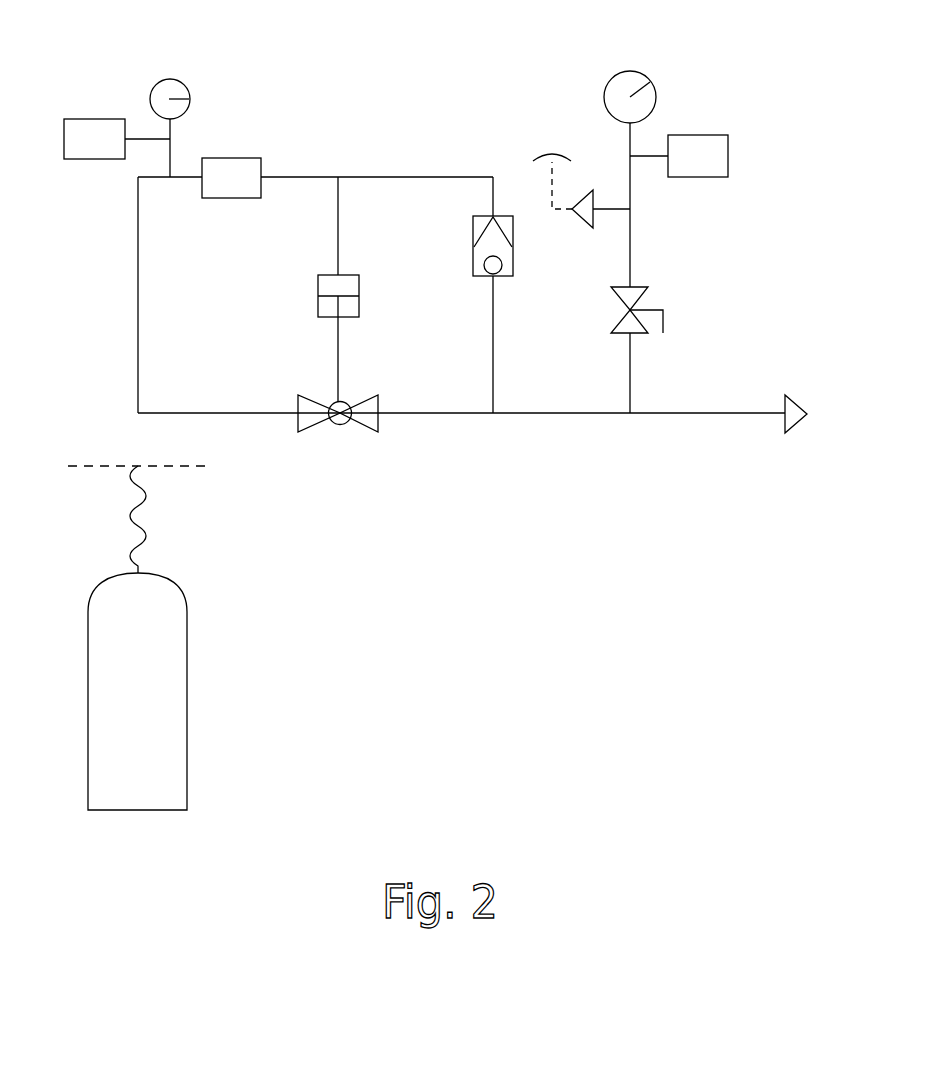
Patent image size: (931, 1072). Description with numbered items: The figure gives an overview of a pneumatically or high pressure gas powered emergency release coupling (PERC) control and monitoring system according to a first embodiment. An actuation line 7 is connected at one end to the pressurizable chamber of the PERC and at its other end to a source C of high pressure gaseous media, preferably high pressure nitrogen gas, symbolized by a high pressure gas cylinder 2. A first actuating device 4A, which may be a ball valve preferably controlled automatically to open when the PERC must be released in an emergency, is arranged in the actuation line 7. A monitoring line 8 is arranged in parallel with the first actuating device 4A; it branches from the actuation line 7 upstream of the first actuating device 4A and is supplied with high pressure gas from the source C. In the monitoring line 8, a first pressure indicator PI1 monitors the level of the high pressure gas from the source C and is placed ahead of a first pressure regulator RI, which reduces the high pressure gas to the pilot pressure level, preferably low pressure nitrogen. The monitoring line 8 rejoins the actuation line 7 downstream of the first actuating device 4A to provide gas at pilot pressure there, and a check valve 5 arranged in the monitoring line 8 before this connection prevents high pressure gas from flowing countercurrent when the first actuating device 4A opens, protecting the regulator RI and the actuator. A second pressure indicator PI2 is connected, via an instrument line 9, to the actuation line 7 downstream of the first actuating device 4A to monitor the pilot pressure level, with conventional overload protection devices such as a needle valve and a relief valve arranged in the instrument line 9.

The high pressure gas cylinder 2 is at (187, 710).
The first actuating device 4A is at (310, 417).
The check valve 5 is at (481, 226).
The actuation line 7 is at (727, 413).
The monitoring line 8 is at (355, 177).
The instrument line 9 is at (630, 247).
The first pressure indicator PI1 is at (170, 79).
The second pressure indicator PI2 is at (630, 71).
The first pressure regulator RI is at (231, 162).
The source of high pressure gaseous media C is at (80, 456).